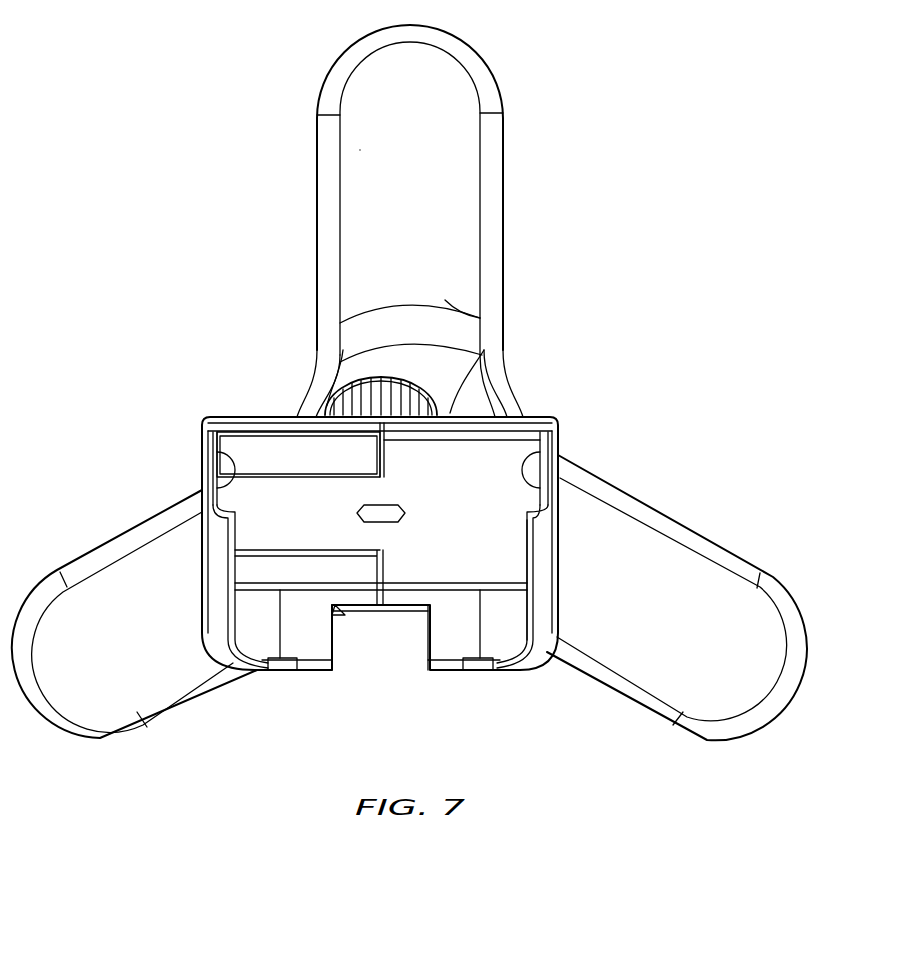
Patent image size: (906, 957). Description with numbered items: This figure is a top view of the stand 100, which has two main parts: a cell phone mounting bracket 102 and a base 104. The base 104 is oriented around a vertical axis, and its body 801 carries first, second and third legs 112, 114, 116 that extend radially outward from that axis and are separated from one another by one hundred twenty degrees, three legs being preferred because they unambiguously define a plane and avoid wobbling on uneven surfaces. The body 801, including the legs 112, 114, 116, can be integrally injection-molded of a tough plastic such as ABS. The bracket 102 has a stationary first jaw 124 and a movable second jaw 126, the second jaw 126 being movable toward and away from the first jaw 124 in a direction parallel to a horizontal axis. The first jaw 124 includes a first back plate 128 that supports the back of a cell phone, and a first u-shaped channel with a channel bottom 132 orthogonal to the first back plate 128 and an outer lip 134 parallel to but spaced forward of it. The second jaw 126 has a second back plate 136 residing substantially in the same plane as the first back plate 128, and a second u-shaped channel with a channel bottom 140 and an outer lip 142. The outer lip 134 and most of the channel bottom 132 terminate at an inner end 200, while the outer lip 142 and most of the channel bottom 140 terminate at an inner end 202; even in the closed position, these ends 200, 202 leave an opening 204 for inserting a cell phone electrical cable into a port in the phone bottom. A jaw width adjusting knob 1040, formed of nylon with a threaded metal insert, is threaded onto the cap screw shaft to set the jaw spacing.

The stand 100 is at (113, 142).
The cell phone mounting bracket 102 is at (168, 463).
The base 104 is at (505, 190).
The first leg 112 is at (695, 669).
The second leg 114 is at (390, 121).
The third leg 116 is at (80, 669).
The first jaw 124 is at (212, 590).
The second jaw 126 is at (551, 592).
The first back plate 128 is at (258, 450).
The channel bottom 132 is at (228, 456).
The outer lip 134 is at (235, 562).
The second back plate 136 is at (450, 488).
The channel bottom 140 is at (556, 453).
The outer lip 142 is at (523, 548).
The inner end 200 is at (340, 650).
The inner end 202 is at (418, 650).
The opening 204 is at (378, 671).
The body 801 is at (457, 327).
The jaw width adjusting knob 1040 is at (418, 378).